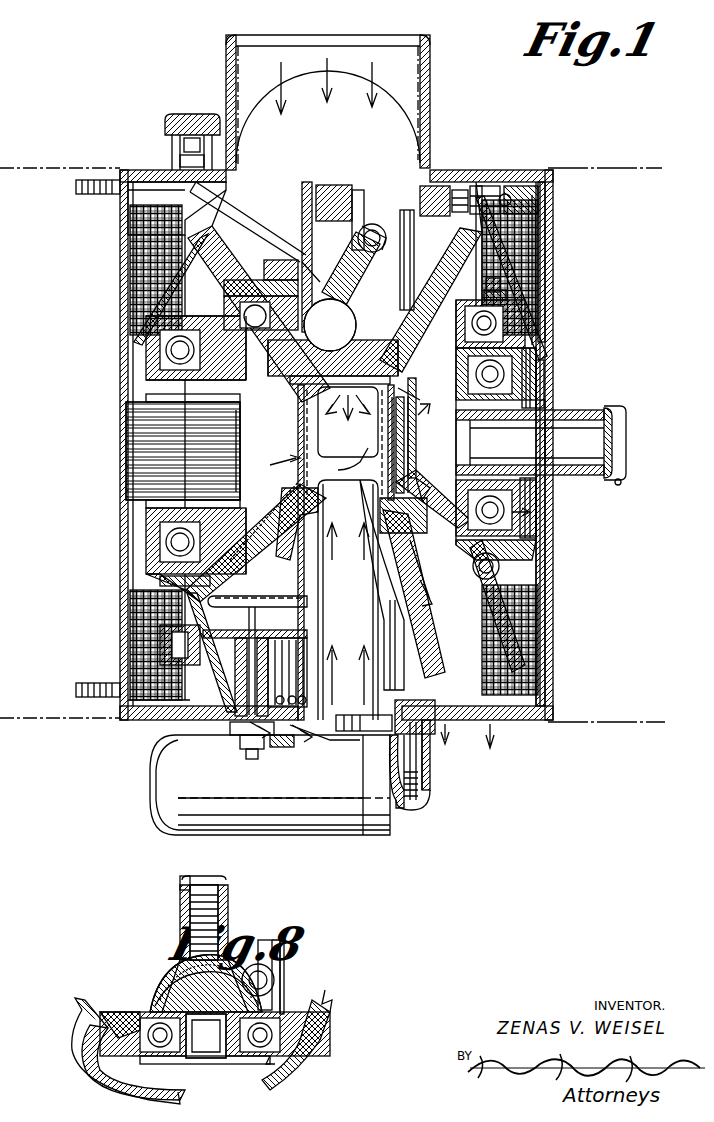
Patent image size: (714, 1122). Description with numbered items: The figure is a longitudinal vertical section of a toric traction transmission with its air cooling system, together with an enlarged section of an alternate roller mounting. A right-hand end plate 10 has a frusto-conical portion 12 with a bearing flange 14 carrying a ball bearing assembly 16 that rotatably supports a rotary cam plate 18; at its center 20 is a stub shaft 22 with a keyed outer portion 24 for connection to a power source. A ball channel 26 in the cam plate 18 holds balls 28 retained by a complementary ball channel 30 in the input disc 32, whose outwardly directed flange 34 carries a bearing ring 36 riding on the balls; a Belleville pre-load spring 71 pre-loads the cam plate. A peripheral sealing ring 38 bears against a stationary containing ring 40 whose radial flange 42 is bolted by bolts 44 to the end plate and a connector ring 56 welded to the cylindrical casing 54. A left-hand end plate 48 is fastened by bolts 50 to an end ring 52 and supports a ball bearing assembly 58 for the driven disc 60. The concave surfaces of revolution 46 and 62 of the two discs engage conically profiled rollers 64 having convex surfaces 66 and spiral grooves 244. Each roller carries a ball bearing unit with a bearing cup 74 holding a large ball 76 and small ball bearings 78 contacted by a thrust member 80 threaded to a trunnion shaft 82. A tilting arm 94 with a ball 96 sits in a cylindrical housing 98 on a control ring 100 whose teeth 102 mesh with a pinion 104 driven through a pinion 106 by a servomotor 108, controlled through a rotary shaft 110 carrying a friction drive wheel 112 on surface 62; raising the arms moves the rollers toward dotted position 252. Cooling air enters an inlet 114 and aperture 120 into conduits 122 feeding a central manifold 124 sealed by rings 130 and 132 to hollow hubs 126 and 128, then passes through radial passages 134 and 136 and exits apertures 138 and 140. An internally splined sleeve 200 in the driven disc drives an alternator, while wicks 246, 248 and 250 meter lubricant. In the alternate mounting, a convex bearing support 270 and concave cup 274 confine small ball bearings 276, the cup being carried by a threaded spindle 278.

In FIG. 1, the right-hand end plate 10 is at (508, 720).
In FIG. 1, the frusto-conical portion 12 is at (545, 570).
In FIG. 1, the bearing flange 14 is at (538, 552).
In FIG. 1, the ball bearing assembly 16 is at (536, 520).
In FIG. 1, the rotary cam plate 18 is at (548, 405).
In FIG. 1, the center of the cam plate 20 is at (510, 420).
In FIG. 1, the stub shaft 22 is at (608, 410).
In FIG. 1, the keyed outer portion 24 is at (620, 484).
In FIG. 1, the ball channel 26 is at (530, 330).
In FIG. 1, the balls 28 is at (528, 312).
In FIG. 1, the complementary ball channel 30 is at (492, 268).
In FIG. 1, the rotary input member or driving disc 32 is at (545, 220).
In FIG. 8, the rotary input member or driving disc 32 is at (326, 1050).
In FIG. 1, the outwardly directed flange 34 is at (504, 285).
In FIG. 1, the bearing ring 36 is at (510, 295).
In FIG. 1, the peripheral sealing ring 38 is at (512, 200).
In FIG. 1, the stationary containing ring 40 is at (520, 192).
In FIG. 1, the radial flange 42 is at (460, 192).
In FIG. 1, the bolts 44 is at (485, 192).
In FIG. 1, the concave surface of revolution 46 is at (424, 610).
In FIG. 1, the left-hand end plate 48 is at (150, 578).
In FIG. 1, the bolts 50 is at (160, 635).
In FIG. 1, the end ring 52 is at (212, 684).
In FIG. 1, the cylindrical casing member 54 is at (125, 722).
In FIG. 1, the connector ring 56 is at (440, 190).
In FIG. 1, the ball bearing assembly 58 is at (146, 540).
In FIG. 1, the output or driven disc 60 is at (166, 366).
In FIG. 8, the output or driven disc 60 is at (116, 1076).
In FIG. 1, the concave surface of revolution 62 is at (270, 570).
In FIG. 8, the concave surface of revolution 62 is at (165, 1066).
In FIG. 1, the power-transmitting rollers 64 is at (280, 308).
In FIG. 8, the power-transmitting rollers 64 is at (118, 1016).
In FIG. 1, the convex surface of revolution 66 is at (262, 282).
In FIG. 8, the convex surface of revolution 66 is at (90, 1048).
In FIG. 1, the pre-load spring 71 is at (540, 500).
In FIG. 1, the bearing cup 74 is at (333, 340).
In FIG. 1, the large ball 76 is at (330, 356).
In FIG. 1, the small ball bearings 78 is at (330, 325).
In FIG. 1, the thrust member 80 is at (290, 240).
In FIG. 1, the trunnion shaft 82 is at (354, 265).
In FIG. 8, the trunnion shaft 82 is at (228, 905).
In FIG. 1, the roller actuating control or tilting arm 94 is at (336, 222).
In FIG. 8, the roller actuating control or tilting arm 94 is at (272, 975).
In FIG. 1, the ball 96 is at (384, 240).
In FIG. 8, the ball 96 is at (280, 990).
In FIG. 1, the cylindrical housing 98 is at (374, 224).
In FIG. 8, the cylindrical housing 98 is at (268, 950).
In FIG. 1, the control ring 100 is at (348, 612).
In FIG. 8, the control ring 100 is at (282, 945).
In FIG. 1, the external peripheral teeth 102 is at (350, 690).
In FIG. 1, the pinion 104 is at (432, 760).
In FIG. 1, the pinion 106 is at (420, 808).
In FIG. 1, the servomotor 108 is at (345, 838).
In FIG. 1, the rotary shaft 110 is at (238, 742).
In FIG. 1, the friction drive wheel 112 is at (236, 615).
In FIG. 1, the inlet 114 is at (431, 75).
In FIG. 1, the air inlet aperture 120 is at (328, 740).
In FIG. 1, the conduits 122 is at (310, 552).
In FIG. 1, the central manifold 124 is at (408, 384).
In FIG. 1, the hollow hub portion 126 is at (440, 440).
In FIG. 1, the hollow hub portion 128 is at (250, 437).
In FIG. 1, the sealing ring 130 is at (404, 480).
In FIG. 1, the sealing ring 132 is at (276, 463).
In FIG. 1, the radially extending air passages 134 is at (510, 598).
In FIG. 1, the radially extending air passages 136 is at (292, 402).
In FIG. 1, the apertures 138 is at (537, 236).
In FIG. 1, the apertures 140 is at (132, 286).
In FIG. 1, the internally splined sleeve 200 is at (128, 450).
In FIG. 1, the spirally extending grooves 244 is at (220, 258).
In FIG. 1, the capillary wick 246 is at (540, 380).
In FIG. 1, the capillary wick 248 is at (345, 735).
In FIG. 1, the wick 250 is at (150, 500).
In FIG. 1, the dotted line position 252 is at (418, 250).
In FIG. 8, the bearing support 270 is at (220, 1066).
In FIG. 8, the concave cup 274 is at (168, 960).
In FIG. 8, the small ball bearings 276 is at (240, 975).
In FIG. 8, the threaded spindle 278 is at (180, 894).